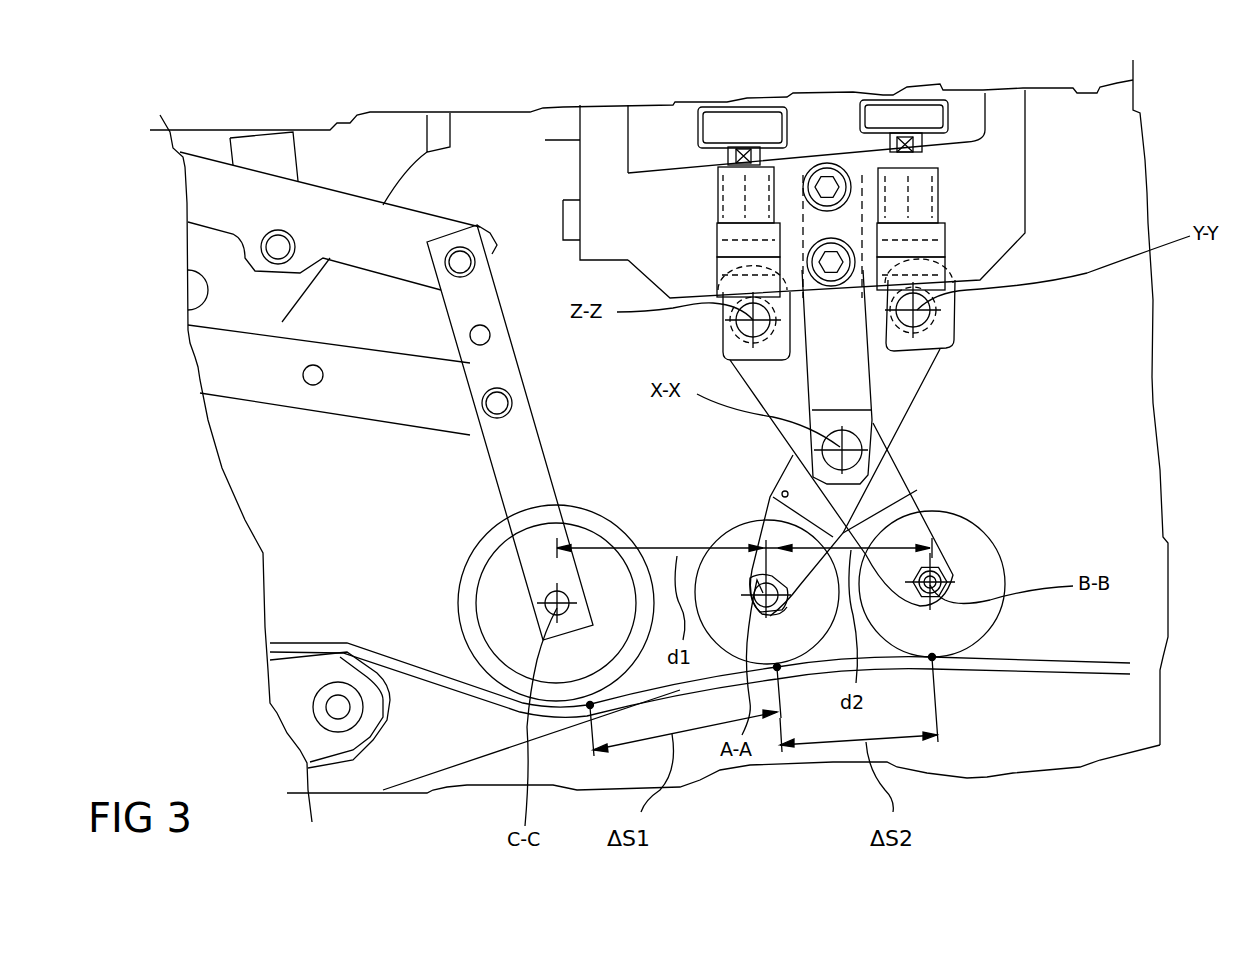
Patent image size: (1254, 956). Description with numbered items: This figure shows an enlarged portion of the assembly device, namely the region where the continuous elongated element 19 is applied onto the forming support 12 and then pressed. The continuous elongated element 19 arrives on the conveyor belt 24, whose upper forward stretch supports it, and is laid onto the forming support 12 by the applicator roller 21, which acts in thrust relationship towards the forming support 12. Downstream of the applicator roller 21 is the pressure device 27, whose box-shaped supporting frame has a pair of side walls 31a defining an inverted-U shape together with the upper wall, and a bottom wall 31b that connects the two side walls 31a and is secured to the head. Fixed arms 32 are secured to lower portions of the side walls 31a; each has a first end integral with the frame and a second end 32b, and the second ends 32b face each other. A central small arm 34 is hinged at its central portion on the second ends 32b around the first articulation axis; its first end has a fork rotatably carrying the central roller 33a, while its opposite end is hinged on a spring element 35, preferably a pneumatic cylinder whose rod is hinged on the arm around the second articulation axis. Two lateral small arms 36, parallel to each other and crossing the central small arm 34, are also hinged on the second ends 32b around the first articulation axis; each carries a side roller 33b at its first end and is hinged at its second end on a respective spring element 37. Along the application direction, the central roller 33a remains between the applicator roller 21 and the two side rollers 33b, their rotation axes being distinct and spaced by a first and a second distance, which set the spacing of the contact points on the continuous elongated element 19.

The forming support 12 is at (1035, 730).
The continuous elongated element 19 is at (1093, 672).
The applicator roller 21 is at (589, 495).
The conveyor belt 24 is at (377, 740).
The pressure device 27 is at (1046, 144).
The side walls 31a is at (1007, 207).
The bottom wall 31b is at (600, 123).
The fixed arms 32 is at (845, 378).
The second end 32b is at (866, 466).
The central roller 33a is at (736, 518).
The side rollers 33b is at (998, 536).
The central small arm 34 is at (940, 363).
The spring element 35 is at (962, 103).
The lateral small arms 36 is at (768, 431).
The spring element 37 is at (686, 124).